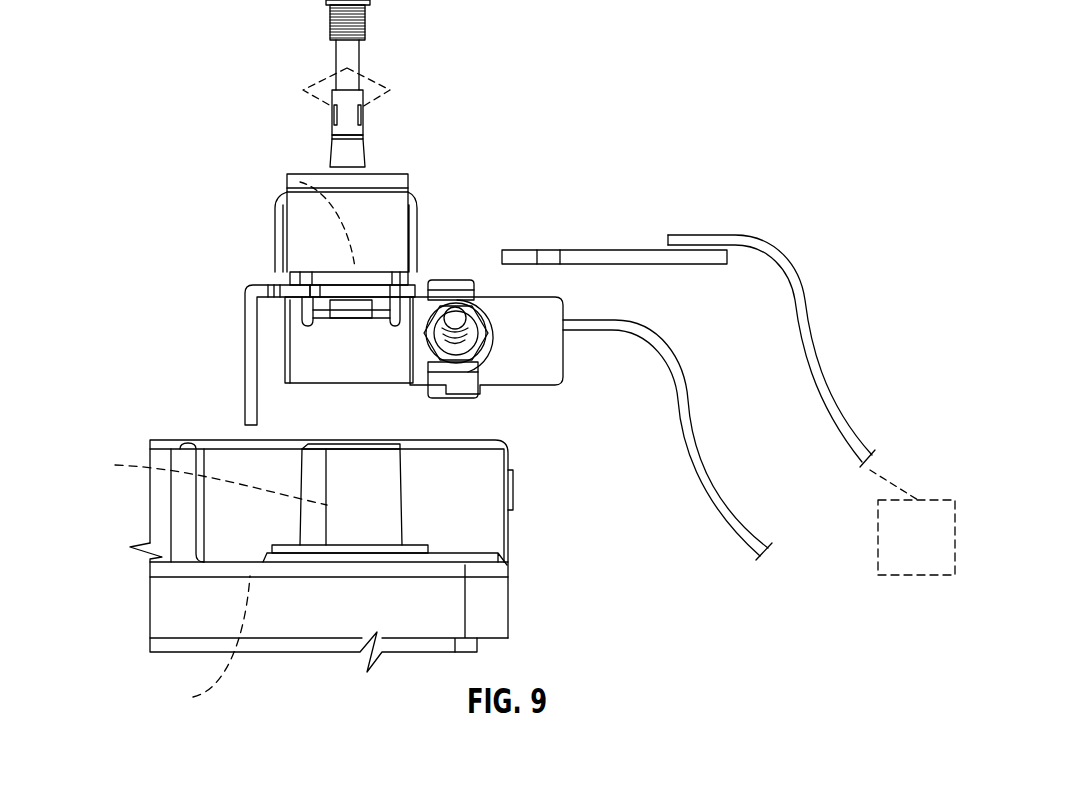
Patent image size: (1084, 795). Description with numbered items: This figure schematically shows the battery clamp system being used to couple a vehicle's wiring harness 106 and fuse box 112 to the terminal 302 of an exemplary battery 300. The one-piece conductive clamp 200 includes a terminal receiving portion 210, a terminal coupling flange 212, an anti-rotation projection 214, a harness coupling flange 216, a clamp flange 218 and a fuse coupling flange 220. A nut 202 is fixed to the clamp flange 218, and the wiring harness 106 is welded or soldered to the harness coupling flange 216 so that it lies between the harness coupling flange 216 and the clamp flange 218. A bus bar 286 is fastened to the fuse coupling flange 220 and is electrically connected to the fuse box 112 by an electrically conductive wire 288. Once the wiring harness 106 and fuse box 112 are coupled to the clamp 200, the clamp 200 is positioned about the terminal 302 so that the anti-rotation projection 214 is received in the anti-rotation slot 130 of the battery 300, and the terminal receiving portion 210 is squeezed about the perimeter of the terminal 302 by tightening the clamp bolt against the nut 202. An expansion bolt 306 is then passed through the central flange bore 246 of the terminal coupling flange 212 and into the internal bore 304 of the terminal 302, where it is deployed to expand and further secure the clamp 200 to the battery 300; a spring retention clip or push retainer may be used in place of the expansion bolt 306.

The wiring harness 106 is at (712, 496).
The fuse box 112 is at (938, 553).
The anti-rotation slot 130 is at (200, 646).
The clamp 200 is at (417, 162).
The nut 202 is at (490, 310).
The terminal receiving portion 210 is at (287, 357).
The terminal coupling flange 212 is at (292, 282).
The anti-rotation projection 214 is at (244, 322).
The harness coupling flange 216 is at (572, 372).
The clamp flange 218 is at (508, 342).
The fuse coupling flange 220 is at (278, 233).
The central flange bore 246 is at (300, 182).
The bus bar 286 is at (608, 250).
The electrically conductive wire 288 is at (810, 400).
The battery 300 is at (513, 465).
The terminal 302 is at (408, 525).
The internal bore 304 is at (199, 478).
The expansion bolt 306 is at (417, 62).